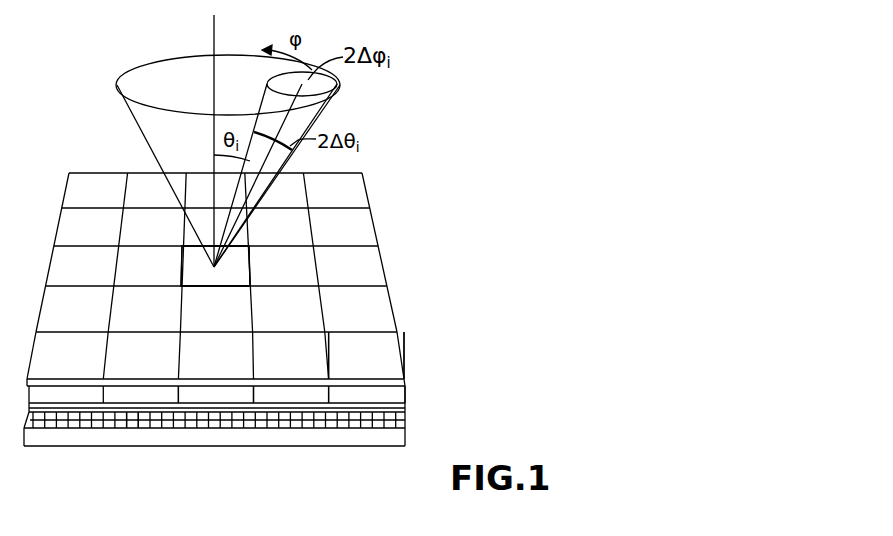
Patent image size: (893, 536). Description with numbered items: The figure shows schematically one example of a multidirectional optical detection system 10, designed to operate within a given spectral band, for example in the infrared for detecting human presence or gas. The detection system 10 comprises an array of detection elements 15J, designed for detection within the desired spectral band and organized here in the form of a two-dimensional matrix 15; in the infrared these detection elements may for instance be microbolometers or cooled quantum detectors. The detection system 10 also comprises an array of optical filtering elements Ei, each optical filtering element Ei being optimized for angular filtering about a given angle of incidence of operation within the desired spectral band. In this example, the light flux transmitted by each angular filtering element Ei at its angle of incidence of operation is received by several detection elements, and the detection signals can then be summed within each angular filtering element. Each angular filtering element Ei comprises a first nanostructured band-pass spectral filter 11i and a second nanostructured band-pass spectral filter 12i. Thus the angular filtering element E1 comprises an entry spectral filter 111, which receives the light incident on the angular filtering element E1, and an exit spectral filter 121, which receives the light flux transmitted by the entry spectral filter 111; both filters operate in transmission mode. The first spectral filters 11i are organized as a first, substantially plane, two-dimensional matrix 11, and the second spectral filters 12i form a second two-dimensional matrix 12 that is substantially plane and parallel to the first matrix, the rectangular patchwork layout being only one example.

The multidirectional optical detection system 10 is at (267, 285).
The first two-dimensional matrix 11 is at (405, 360).
The second two-dimensional matrix 12 is at (405, 400).
The two-dimensional matrix of detection elements 15 is at (405, 443).
The first nanostructured band-pass spectral filter 11i is at (345, 238).
The second nanostructured band-pass spectral filter 12i is at (344, 316).
The entry spectral filter 111 is at (360, 358).
The exit spectral filter 121 is at (370, 393).
The detection element 15J is at (135, 418).
The optical filtering element Ei is at (227, 278).
The angular filtering element E1 is at (230, 448).